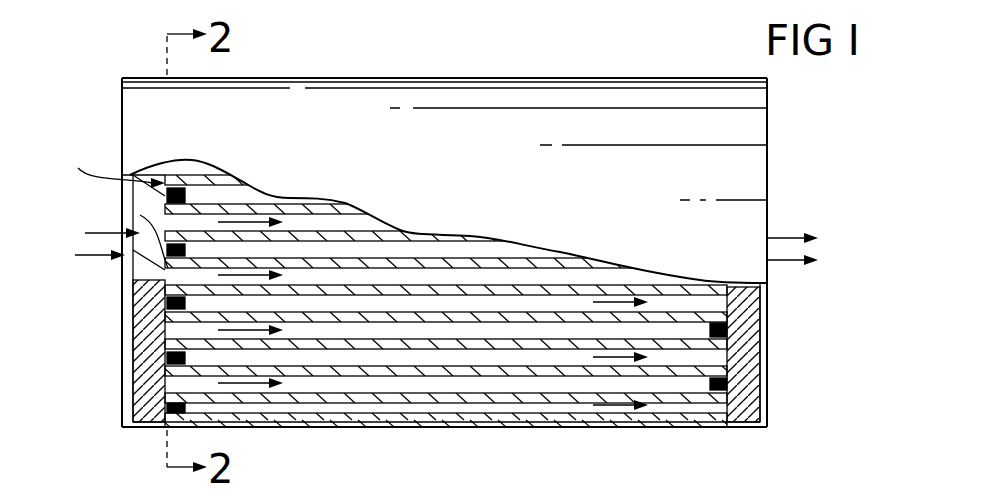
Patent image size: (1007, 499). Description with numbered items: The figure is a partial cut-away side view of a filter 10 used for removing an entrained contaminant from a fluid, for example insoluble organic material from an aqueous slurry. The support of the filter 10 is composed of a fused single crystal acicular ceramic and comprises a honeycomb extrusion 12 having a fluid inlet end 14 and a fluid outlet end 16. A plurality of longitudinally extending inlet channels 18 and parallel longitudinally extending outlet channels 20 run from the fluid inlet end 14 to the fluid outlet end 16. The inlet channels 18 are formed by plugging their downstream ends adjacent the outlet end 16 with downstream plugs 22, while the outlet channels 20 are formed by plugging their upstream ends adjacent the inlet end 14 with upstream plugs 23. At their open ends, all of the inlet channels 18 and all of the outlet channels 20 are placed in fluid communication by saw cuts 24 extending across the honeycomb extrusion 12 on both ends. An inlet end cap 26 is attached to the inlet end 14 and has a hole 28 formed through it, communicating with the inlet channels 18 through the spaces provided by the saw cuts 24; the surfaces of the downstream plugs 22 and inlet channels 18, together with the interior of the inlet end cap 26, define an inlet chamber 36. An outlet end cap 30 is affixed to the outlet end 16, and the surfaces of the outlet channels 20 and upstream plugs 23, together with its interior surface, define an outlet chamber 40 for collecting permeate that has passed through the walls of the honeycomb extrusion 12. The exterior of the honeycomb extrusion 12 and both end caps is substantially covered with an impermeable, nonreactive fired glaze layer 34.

The filter 10 is at (536, 77).
The honeycomb extrusion 12 is at (352, 225).
The fluid inlet end 14 is at (107, 170).
The fluid outlet end 16 is at (762, 400).
The inlet channels 18 is at (293, 228).
The outlet channels 20 is at (453, 310).
The downstream plugs 22 is at (720, 336).
The upstream plugs 23 is at (168, 302).
The saw cuts 24 is at (700, 280).
The inlet end cap 26 is at (148, 333).
The hole 28 is at (132, 272).
The outlet end cap 30 is at (762, 430).
The fired glaze layer 34 is at (122, 428).
The inlet chamber 36 is at (165, 196).
The outlet chamber 40 is at (730, 300).